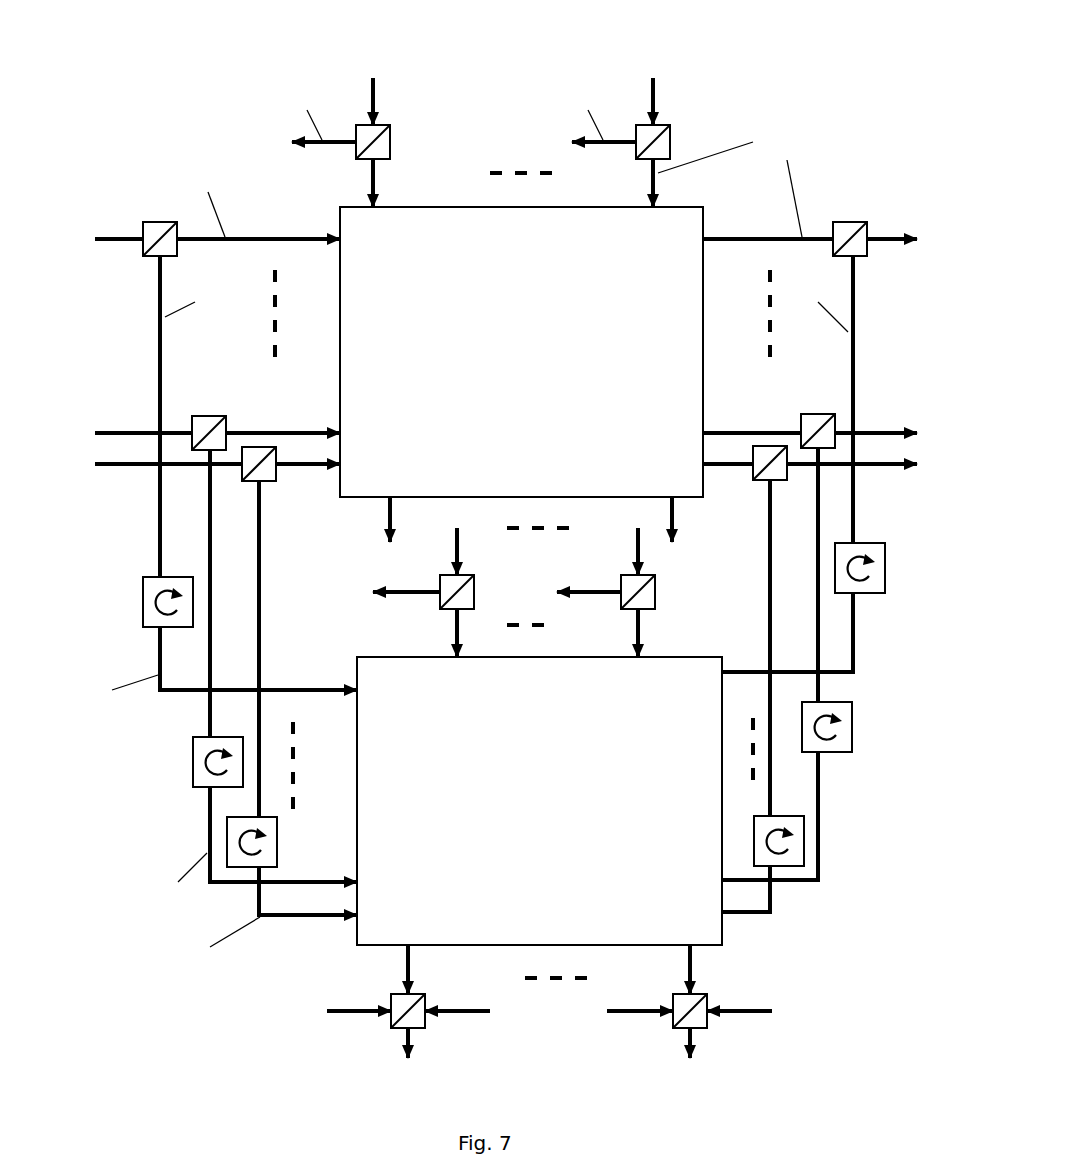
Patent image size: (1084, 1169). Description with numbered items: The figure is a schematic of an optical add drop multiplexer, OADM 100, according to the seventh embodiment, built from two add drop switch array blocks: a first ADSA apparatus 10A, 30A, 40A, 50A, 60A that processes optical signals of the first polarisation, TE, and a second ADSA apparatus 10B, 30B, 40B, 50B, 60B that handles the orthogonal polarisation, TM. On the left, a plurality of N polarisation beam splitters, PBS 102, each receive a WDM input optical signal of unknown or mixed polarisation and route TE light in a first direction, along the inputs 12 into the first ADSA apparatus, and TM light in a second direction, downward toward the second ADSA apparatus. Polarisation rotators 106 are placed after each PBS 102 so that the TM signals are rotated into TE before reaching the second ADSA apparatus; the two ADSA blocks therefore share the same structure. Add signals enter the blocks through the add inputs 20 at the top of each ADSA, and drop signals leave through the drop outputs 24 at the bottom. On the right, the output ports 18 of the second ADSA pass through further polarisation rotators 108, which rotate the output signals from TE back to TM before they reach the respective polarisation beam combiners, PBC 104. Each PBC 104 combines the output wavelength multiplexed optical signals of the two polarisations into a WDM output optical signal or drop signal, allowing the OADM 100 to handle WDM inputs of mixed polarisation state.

The optical add drop multiplexer 100 is at (493, 547).
The polarisation beam splitter 102 is at (152, 230).
The polarisation beam combiner 104 is at (850, 237).
The polarisation rotator 106 is at (150, 610).
The polarisation rotator 108 is at (835, 752).
The input port 12 is at (290, 235).
The output port 18 is at (770, 235).
The add port 20 is at (370, 188).
The drop port 24 is at (388, 515).
The first ADSA apparatus 10A is at (521, 352).
The first ADSA apparatus 30A is at (521, 352).
The first ADSA apparatus 40A is at (521, 352).
The first ADSA apparatus 50A is at (521, 352).
The first ADSA apparatus 60A is at (527, 302).
The second ADSA apparatus 10B is at (539, 801).
The second ADSA apparatus 30B is at (539, 801).
The second ADSA apparatus 40B is at (539, 801).
The second ADSA apparatus 50B is at (539, 801).
The second ADSA apparatus 60B is at (577, 767).